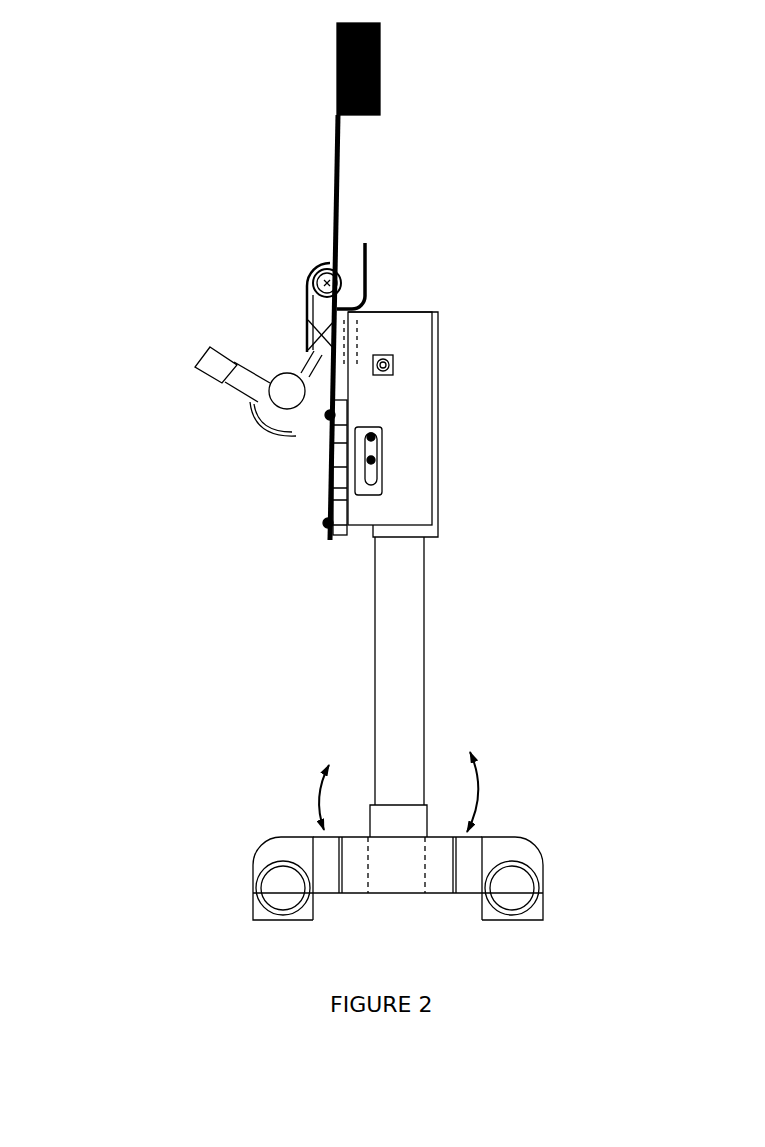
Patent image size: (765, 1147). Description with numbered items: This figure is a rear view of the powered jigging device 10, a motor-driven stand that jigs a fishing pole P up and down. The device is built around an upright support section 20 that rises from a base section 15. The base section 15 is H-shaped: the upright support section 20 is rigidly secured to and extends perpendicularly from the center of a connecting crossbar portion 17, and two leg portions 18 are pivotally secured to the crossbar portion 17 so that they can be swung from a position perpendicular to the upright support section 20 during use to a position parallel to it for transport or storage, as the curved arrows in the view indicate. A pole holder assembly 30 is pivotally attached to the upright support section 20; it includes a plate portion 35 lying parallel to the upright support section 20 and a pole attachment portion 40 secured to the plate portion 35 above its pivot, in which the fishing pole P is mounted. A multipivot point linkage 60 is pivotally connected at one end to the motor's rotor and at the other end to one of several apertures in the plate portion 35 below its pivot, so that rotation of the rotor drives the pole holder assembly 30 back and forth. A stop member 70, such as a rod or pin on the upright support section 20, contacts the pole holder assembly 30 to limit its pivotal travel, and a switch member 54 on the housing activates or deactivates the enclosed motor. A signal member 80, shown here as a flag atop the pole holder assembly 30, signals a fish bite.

The signal member 80 is at (374, 122).
The powered jigging device 10 is at (445, 315).
The upright support section 20 is at (395, 332).
The pole holder assembly 30 is at (322, 340).
The pole attachment portion 40 is at (315, 337).
The fishing pole P is at (262, 392).
The plate portion 35 is at (323, 395).
The multipivot point linkage 60 is at (320, 462).
The switch member 54 is at (398, 380).
The stop member 70 is at (387, 462).
The base section 15 is at (325, 857).
The crossbar portion 17 is at (393, 872).
The leg portions 18 is at (252, 890).